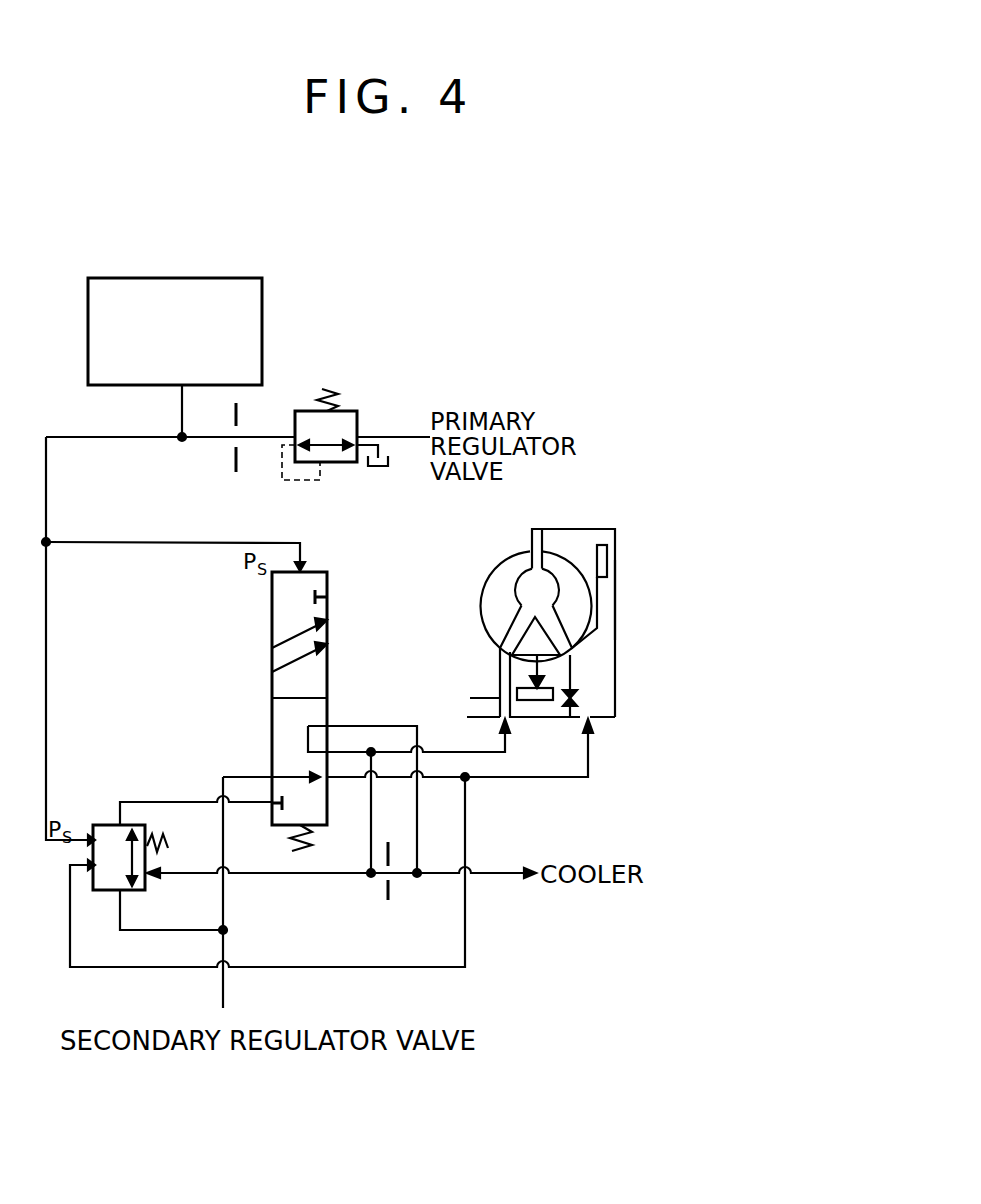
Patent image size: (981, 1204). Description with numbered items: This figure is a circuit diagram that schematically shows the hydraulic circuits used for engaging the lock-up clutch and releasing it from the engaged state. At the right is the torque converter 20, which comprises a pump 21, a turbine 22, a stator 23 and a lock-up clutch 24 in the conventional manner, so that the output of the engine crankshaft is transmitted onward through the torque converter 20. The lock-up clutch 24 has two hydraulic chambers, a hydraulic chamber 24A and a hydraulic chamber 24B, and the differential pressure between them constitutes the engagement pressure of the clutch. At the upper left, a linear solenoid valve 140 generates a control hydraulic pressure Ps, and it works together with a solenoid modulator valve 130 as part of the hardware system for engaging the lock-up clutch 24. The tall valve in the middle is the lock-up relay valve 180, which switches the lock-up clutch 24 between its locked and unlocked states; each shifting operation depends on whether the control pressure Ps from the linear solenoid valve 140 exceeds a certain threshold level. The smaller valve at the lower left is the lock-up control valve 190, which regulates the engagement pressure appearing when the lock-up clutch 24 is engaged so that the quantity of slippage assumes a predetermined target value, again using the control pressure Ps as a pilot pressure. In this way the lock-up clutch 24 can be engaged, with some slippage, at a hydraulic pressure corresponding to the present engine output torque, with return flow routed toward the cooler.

The linear solenoid valve 140 is at (166, 285).
The solenoid modulator valve 130 is at (345, 464).
The lock-up relay valve 180 is at (272, 603).
The lock-up control valve 190 is at (108, 825).
The torque converter 20 is at (563, 577).
The pump 21 is at (497, 580).
The turbine 22 is at (573, 623).
The stator 23 is at (537, 649).
The lock-up clutch 24 is at (610, 555).
The hydraulic chamber 24A is at (610, 597).
The hydraulic chamber 24B is at (562, 542).